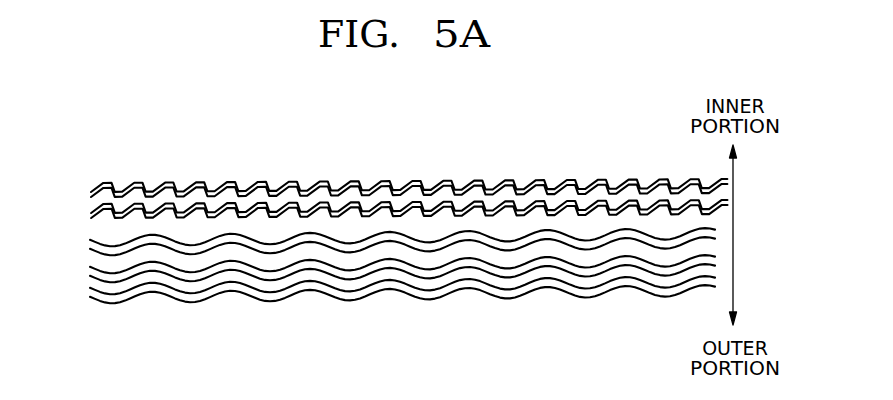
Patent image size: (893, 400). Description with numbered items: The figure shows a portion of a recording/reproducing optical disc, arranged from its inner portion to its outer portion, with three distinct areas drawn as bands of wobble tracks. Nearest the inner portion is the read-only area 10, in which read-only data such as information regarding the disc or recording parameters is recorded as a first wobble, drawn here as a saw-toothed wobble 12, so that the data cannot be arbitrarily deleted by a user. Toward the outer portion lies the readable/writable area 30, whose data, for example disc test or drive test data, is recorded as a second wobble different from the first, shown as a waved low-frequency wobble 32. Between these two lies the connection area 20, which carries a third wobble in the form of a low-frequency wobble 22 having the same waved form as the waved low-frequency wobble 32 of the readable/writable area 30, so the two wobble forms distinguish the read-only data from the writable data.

The read-only area 10 is at (78, 185).
The saw-toothed wobble 12 is at (357, 183).
The connection area 20 is at (376, 187).
The low-frequency wobble 22 is at (424, 240).
The readable/writable area 30 is at (79, 260).
The waved low-frequency wobble 32 is at (437, 298).